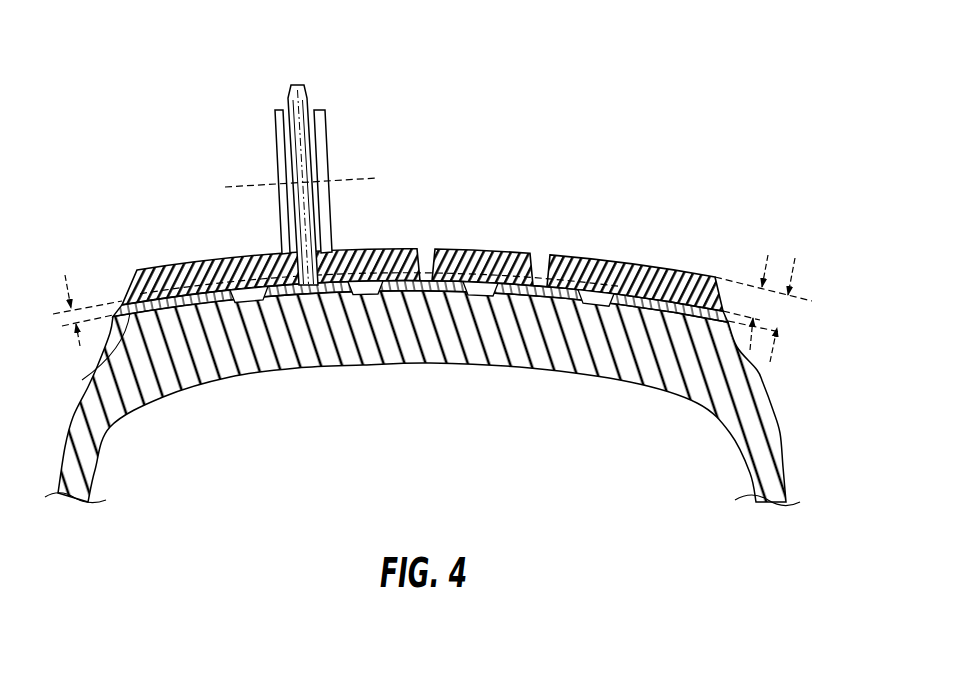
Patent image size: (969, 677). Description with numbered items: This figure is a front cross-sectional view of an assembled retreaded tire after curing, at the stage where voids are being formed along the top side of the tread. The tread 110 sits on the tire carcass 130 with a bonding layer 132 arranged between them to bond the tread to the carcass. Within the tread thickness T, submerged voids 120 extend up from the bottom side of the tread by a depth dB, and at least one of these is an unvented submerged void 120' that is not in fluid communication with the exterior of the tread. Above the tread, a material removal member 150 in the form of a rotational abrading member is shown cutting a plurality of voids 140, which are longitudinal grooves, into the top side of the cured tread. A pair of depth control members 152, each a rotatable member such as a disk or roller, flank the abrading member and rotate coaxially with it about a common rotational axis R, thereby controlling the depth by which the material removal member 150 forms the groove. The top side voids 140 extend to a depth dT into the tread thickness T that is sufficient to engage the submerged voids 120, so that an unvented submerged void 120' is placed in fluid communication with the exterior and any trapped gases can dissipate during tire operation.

The tread 110 is at (655, 265).
The submerged void 120 is at (422, 255).
The unvented submerged void 120' is at (470, 245).
The tire carcass 130 is at (783, 447).
The bonding layer 132 is at (82, 379).
The longitudinal grooves 140 is at (550, 259).
The material removal member 150 is at (297, 84).
The depth control members 152 is at (328, 112).
The rotational axis R is at (357, 181).
The submerged void depth dB is at (67, 281).
The top side void depth dT is at (767, 265).
The tread thickness T is at (794, 273).